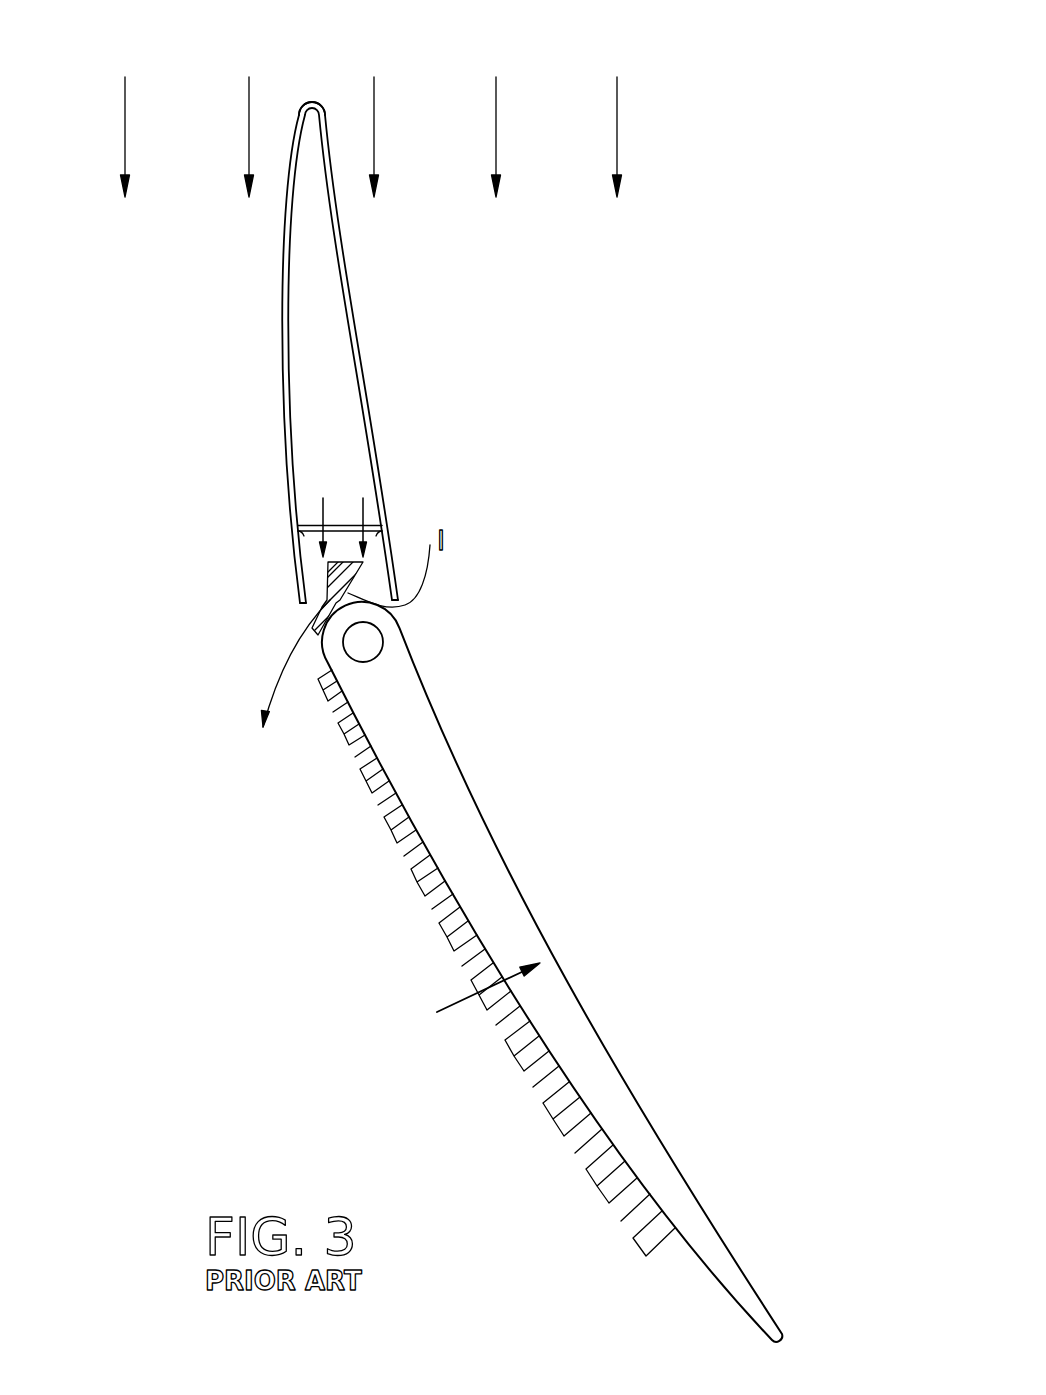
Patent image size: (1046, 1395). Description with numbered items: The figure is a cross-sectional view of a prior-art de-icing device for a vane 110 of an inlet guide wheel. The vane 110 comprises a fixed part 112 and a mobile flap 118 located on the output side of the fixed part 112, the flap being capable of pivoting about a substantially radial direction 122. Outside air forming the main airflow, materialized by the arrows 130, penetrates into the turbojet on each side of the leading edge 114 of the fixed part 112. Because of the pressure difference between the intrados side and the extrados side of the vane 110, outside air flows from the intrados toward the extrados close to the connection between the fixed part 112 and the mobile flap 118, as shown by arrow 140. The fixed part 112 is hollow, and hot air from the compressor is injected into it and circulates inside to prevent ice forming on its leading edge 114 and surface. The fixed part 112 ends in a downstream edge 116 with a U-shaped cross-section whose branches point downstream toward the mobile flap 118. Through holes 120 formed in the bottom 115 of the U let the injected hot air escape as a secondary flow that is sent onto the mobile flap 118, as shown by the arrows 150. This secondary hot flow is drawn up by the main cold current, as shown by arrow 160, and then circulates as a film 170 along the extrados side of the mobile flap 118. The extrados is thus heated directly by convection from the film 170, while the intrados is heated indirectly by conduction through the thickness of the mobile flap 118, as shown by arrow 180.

The vane 110 is at (548, 507).
The fixed part 112 is at (325, 338).
The leading edge 114 is at (312, 98).
The bottom 115 is at (346, 527).
The downstream edge 116 is at (300, 598).
The mobile flap 118 is at (552, 972).
The through holes 120 is at (372, 518).
The substantially radial direction 122 is at (382, 644).
The arrows 130 is at (497, 155).
The arrow 140 is at (270, 687).
The arrows 150 is at (318, 508).
The arrow 160 is at (332, 571).
The film 170 is at (392, 803).
The arrow 180 is at (447, 1013).